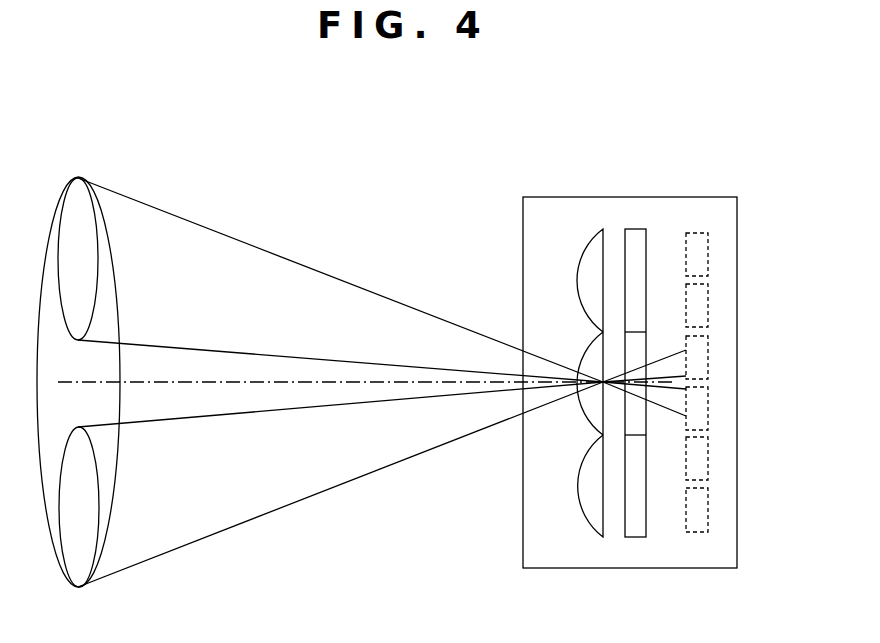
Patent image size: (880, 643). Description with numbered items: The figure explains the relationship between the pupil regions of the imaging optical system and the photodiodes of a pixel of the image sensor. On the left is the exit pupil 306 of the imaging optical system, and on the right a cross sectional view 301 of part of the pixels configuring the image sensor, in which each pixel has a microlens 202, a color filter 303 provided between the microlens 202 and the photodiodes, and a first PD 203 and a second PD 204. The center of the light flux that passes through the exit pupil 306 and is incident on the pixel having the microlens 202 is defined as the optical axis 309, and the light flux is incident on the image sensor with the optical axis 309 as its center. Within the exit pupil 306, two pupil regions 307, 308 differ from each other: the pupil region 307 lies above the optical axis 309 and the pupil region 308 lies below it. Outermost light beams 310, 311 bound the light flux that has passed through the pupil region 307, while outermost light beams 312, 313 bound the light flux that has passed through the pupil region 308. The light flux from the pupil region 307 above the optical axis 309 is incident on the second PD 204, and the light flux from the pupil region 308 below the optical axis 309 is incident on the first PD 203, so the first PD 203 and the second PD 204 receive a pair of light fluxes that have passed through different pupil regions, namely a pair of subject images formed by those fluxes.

The microlens 202 is at (583, 348).
The first PD 203 is at (708, 352).
The second PD 204 is at (708, 418).
The cross sectional view of part of pixels 301 is at (523, 531).
The color filter 303 is at (640, 228).
The exit pupil 306 is at (110, 235).
The pupil region 307 is at (93, 207).
The pupil region 308 is at (95, 557).
The optical axis 309 is at (275, 383).
The outermost light beam 310 is at (200, 224).
The outermost light beam 311 is at (210, 349).
The outermost light beam 312 is at (213, 536).
The outermost light beam 313 is at (172, 418).